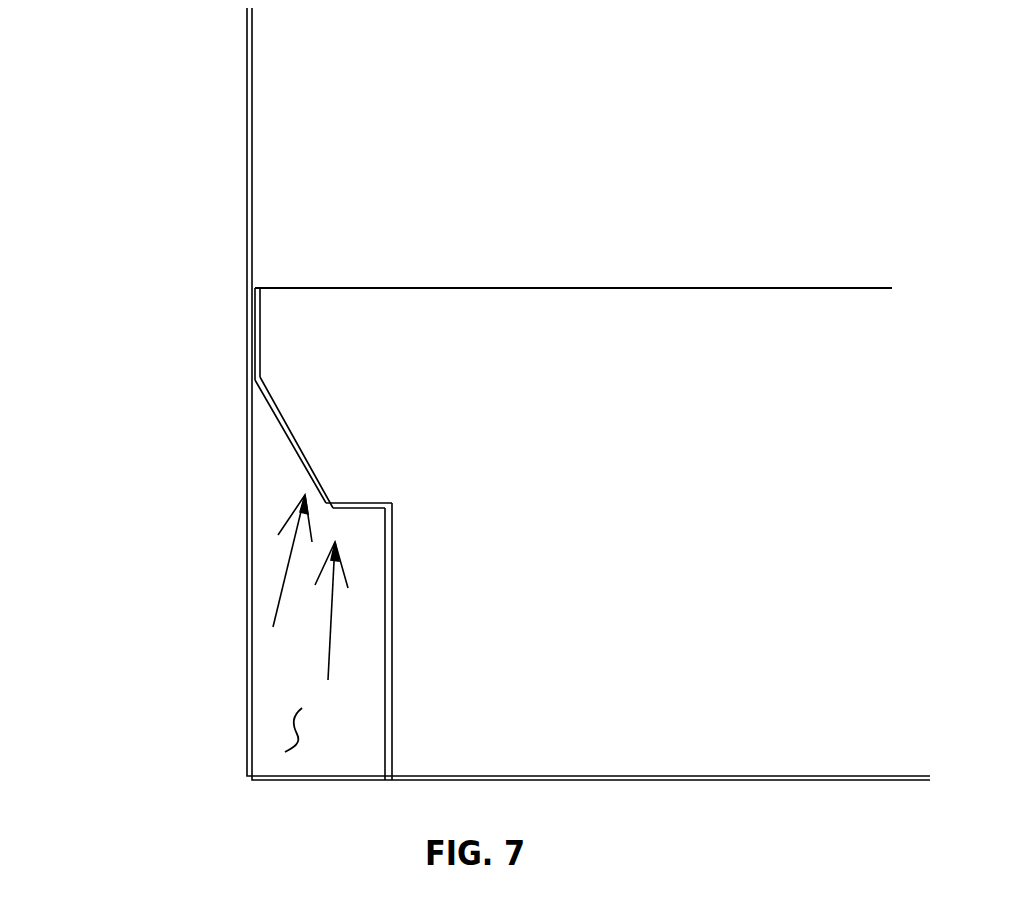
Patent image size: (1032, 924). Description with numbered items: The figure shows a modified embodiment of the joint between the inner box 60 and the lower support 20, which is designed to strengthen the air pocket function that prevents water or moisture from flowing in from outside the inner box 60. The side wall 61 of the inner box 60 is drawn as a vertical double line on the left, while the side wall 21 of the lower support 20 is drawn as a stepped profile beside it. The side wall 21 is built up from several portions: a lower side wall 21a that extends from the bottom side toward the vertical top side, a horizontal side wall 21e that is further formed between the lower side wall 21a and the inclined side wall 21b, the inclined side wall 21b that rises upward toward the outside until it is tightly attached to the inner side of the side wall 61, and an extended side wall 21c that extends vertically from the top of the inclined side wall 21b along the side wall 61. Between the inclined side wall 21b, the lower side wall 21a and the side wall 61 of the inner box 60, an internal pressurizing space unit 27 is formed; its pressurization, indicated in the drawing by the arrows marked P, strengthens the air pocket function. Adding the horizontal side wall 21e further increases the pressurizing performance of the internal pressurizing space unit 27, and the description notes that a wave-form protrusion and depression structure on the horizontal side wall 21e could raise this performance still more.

The side wall 61 is at (246, 93).
The inner box 60 is at (473, 394).
The lower support 20 is at (691, 288).
The side wall 21 is at (503, 352).
The lower side wall 21a is at (392, 681).
The inclined side wall 21b is at (308, 462).
The extended side wall 21c is at (258, 335).
The horizontal side wall 21e is at (368, 503).
The internal pressurizing space unit 27 is at (290, 728).
The flow path P is at (301, 592).